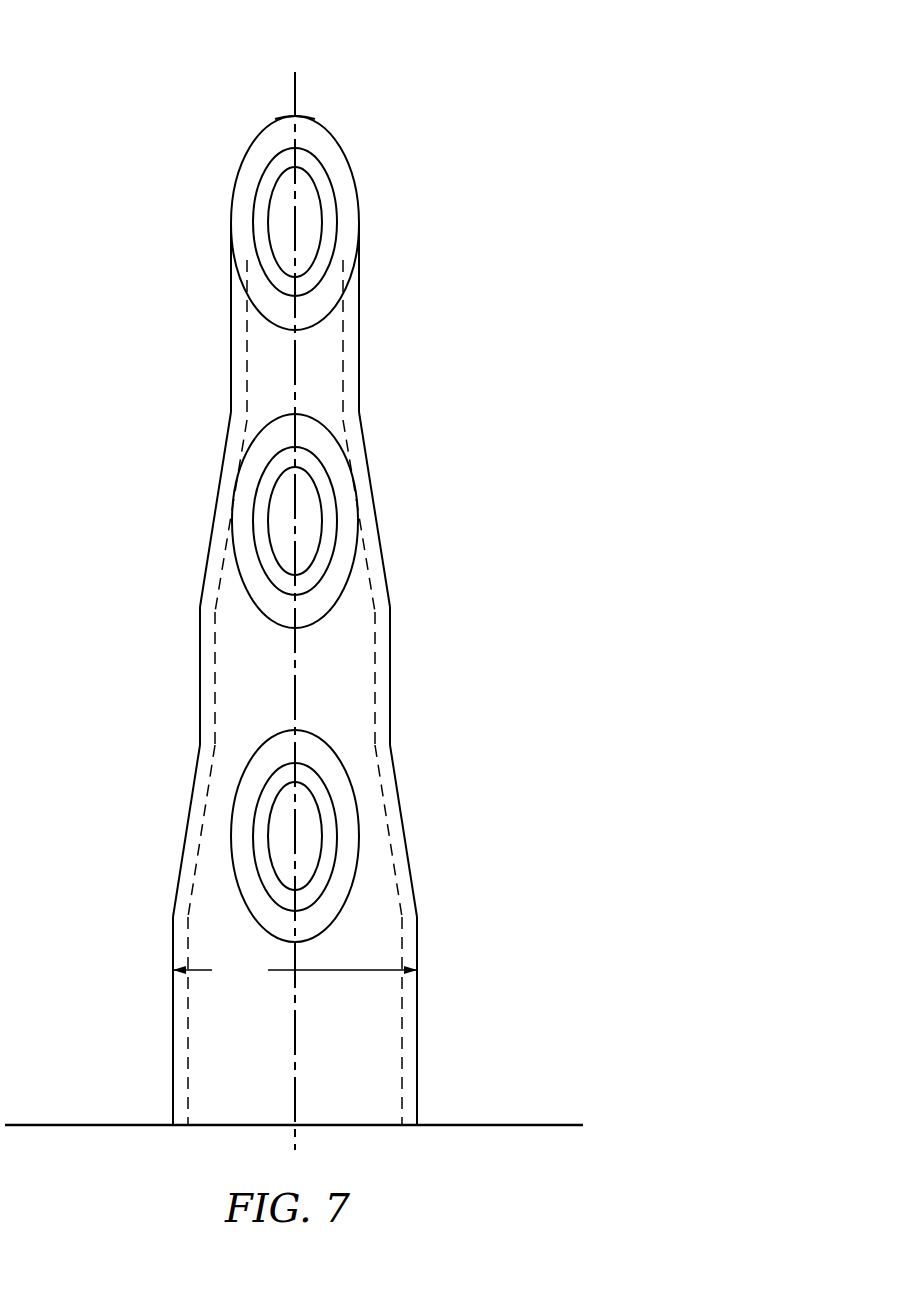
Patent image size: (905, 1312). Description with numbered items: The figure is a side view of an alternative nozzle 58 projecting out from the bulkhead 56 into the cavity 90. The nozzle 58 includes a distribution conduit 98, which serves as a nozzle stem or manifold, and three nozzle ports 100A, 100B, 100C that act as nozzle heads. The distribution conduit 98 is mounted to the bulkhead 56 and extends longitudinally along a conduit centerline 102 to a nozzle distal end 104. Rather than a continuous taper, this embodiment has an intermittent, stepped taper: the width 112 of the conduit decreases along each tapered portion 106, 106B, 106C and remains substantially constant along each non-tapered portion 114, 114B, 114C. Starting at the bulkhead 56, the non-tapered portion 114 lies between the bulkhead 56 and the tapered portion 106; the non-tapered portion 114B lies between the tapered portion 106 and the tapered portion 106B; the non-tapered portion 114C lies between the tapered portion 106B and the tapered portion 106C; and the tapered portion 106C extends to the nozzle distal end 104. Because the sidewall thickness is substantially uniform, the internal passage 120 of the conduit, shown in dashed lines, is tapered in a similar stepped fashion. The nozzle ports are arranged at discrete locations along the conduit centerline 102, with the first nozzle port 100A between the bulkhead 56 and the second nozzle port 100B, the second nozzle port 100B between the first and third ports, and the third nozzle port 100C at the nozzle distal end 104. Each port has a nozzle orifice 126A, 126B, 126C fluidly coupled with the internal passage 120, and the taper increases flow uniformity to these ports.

The bulkhead 56 is at (538, 1117).
The nozzle 58 is at (474, 67).
The cavity 90 is at (101, 345).
The distribution conduit 98 is at (169, 1025).
The first nozzle port 100A is at (361, 800).
The second nozzle port 100B is at (370, 492).
The third nozzle port 100C is at (358, 159).
The longitudinal conduit centerline 102 is at (292, 82).
The nozzle distal end 104 is at (297, 115).
The tapered portion 106 is at (172, 822).
The tapered portion 106B is at (200, 515).
The tapered portion 106C is at (229, 188).
The width 112 is at (295, 971).
The non-tapered portion 114 is at (164, 936).
The non-tapered portion 114B is at (197, 660).
The non-tapered portion 114C is at (219, 371).
The internal passage 120 is at (385, 1028).
The nozzle orifice 126A is at (312, 850).
The nozzle orifice 126B is at (312, 532).
The nozzle orifice 126C is at (312, 235).